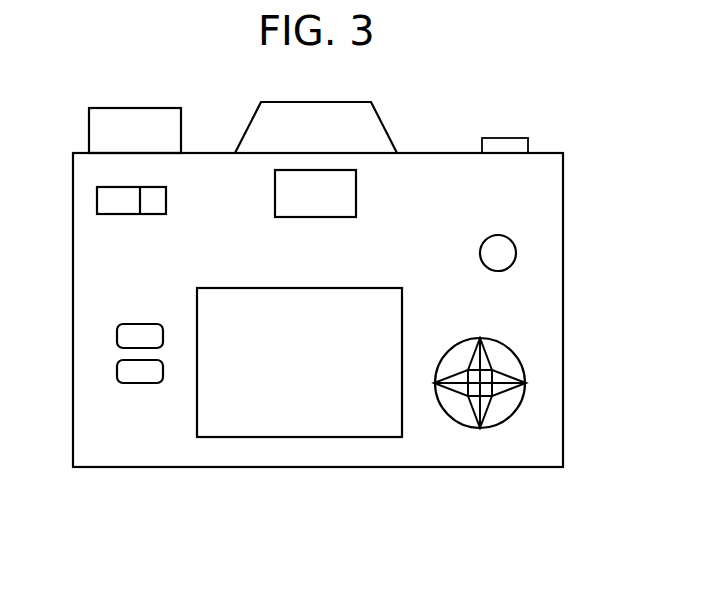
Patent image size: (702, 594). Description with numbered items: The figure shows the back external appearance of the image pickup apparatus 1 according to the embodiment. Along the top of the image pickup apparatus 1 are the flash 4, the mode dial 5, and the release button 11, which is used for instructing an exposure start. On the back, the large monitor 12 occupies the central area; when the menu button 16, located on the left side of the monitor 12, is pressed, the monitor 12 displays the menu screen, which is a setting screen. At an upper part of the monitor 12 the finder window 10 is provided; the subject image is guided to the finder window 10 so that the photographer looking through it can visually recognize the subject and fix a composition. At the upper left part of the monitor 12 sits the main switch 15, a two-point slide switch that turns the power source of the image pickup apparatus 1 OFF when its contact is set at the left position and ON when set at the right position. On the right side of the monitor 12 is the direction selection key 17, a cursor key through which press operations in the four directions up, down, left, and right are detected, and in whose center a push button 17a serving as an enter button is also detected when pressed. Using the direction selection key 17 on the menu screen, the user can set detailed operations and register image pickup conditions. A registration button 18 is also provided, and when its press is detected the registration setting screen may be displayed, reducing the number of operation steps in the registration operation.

The image pickup apparatus 1 is at (127, 58).
The flash 4 is at (386, 124).
The mode dial 5 is at (89, 131).
The finder window 10 is at (357, 193).
The release button 11 is at (508, 138).
The monitor 12 is at (300, 437).
The main switch 15 is at (120, 214).
The menu button 16 is at (117, 336).
The direction selection key 17 is at (500, 428).
The push button 17a is at (524, 388).
The registration button 18 is at (516, 253).